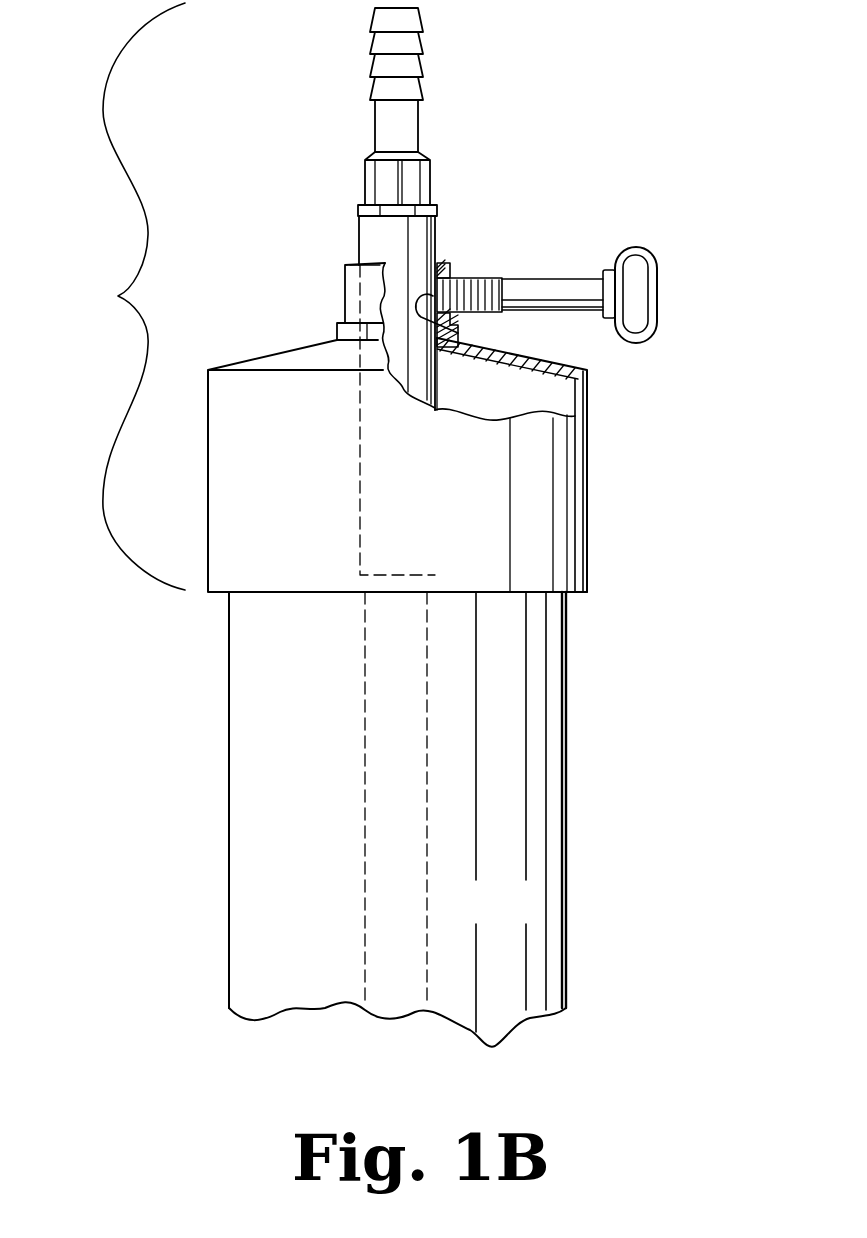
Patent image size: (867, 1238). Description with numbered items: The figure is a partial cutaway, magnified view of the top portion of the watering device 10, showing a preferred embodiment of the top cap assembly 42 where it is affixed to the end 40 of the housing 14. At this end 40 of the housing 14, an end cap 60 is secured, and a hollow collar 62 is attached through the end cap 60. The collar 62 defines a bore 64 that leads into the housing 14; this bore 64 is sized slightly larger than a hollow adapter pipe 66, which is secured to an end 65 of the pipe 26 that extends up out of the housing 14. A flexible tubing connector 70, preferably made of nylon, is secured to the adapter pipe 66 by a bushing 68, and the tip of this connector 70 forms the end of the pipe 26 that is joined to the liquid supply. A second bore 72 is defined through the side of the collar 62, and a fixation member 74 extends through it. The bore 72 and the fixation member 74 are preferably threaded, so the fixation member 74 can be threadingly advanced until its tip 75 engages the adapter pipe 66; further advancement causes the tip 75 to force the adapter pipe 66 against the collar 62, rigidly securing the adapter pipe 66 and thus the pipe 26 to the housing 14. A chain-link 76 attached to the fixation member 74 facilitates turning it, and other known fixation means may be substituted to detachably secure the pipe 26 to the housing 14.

The watering device 10 is at (640, 894).
The housing 14 is at (229, 944).
The pipe 26 is at (365, 748).
The end of housing 40 is at (232, 594).
The top cap assembly 42 is at (118, 296).
The end cap 60 is at (588, 565).
The collar 62 is at (345, 293).
The bore 64 is at (357, 263).
The end of pipe 65 is at (407, 578).
The adapter pipe 66 is at (435, 230).
The bushing 68 is at (430, 170).
The flexible tubing connector 70 is at (418, 42).
The bore 72 is at (445, 272).
The fixation member 74 is at (553, 278).
The tip 75 is at (440, 330).
The chain-link 76 is at (655, 256).